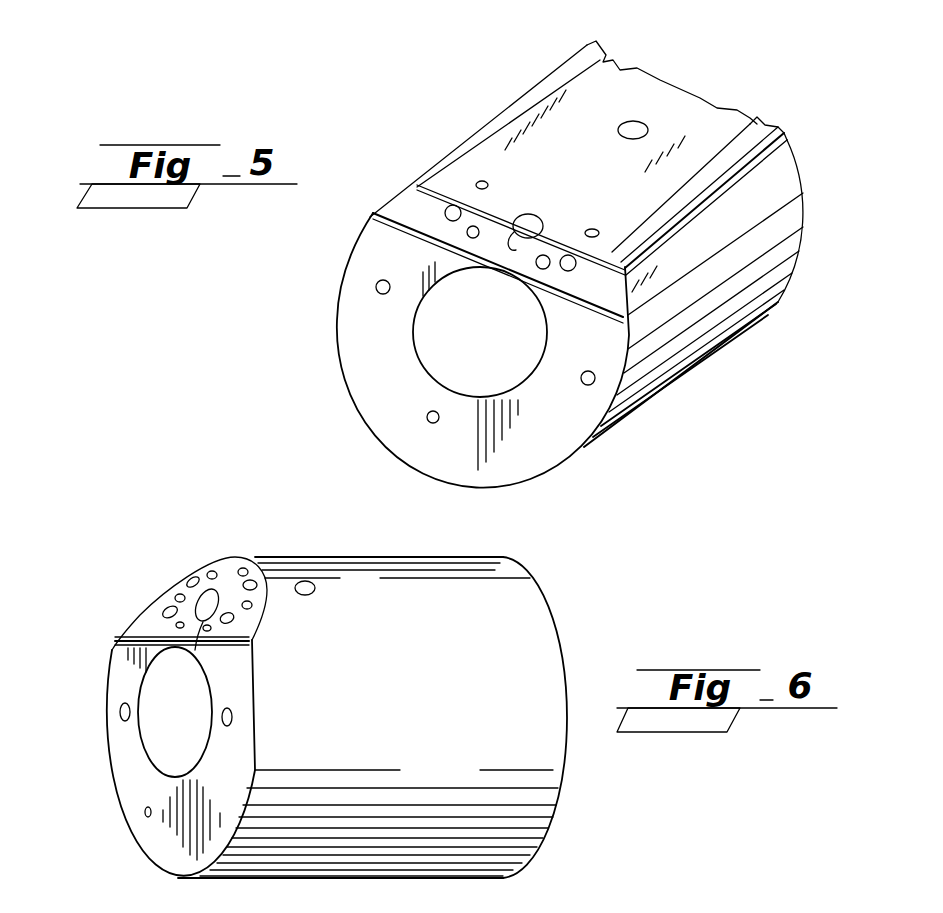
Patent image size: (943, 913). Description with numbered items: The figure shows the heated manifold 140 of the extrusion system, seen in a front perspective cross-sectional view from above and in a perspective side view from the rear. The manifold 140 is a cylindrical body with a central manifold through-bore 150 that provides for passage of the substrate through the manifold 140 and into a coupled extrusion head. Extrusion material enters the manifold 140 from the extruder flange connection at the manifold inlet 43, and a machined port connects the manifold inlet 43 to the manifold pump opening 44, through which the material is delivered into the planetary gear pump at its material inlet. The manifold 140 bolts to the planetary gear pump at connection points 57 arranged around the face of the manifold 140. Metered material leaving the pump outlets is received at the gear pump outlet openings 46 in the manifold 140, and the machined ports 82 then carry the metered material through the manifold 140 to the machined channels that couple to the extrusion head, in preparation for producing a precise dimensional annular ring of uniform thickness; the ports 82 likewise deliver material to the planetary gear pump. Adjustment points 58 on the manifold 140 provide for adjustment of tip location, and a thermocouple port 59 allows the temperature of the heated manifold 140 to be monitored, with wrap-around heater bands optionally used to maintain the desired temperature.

In FIG. 5, the manifold inlet 43 is at (635, 125).
In FIG. 5, the manifold pump opening 44 is at (520, 222).
In FIG. 6, the manifold pump opening 44 is at (200, 625).
In FIG. 5, the gear pump outlet openings 46 is at (452, 205).
In FIG. 6, the gear pump outlet openings 46 is at (213, 570).
In FIG. 5, the connection points 57 is at (485, 180).
In FIG. 6, the connection points 57 is at (190, 578).
In FIG. 5, the adjustment points 58 is at (378, 286).
In FIG. 6, the adjustment points 58 is at (120, 710).
In FIG. 5, the thermocouple port 59 is at (426, 420).
In FIG. 6, the thermocouple port 59 is at (145, 817).
In FIG. 5, the ports 82 is at (563, 95).
In FIG. 5, the manifold 140 is at (750, 237).
In FIG. 6, the manifold 140 is at (360, 736).
In FIG. 5, the manifold through-bore 150 is at (457, 345).
In FIG. 6, the manifold through-bore 150 is at (152, 732).